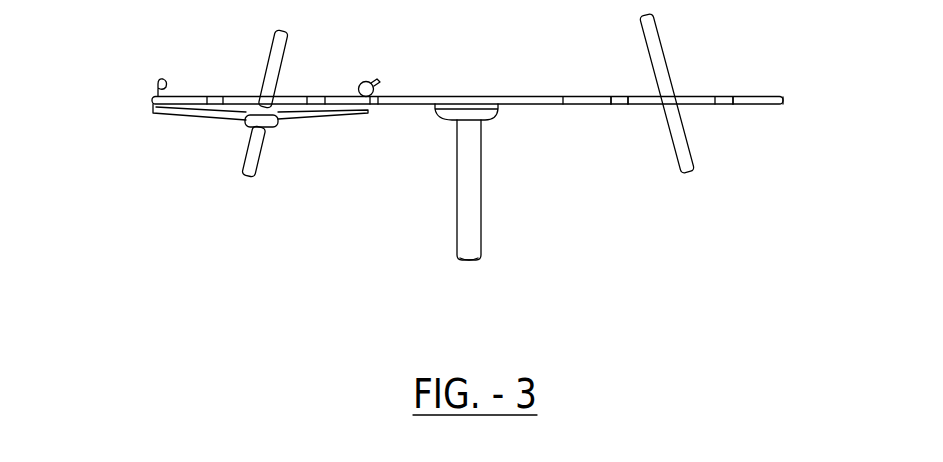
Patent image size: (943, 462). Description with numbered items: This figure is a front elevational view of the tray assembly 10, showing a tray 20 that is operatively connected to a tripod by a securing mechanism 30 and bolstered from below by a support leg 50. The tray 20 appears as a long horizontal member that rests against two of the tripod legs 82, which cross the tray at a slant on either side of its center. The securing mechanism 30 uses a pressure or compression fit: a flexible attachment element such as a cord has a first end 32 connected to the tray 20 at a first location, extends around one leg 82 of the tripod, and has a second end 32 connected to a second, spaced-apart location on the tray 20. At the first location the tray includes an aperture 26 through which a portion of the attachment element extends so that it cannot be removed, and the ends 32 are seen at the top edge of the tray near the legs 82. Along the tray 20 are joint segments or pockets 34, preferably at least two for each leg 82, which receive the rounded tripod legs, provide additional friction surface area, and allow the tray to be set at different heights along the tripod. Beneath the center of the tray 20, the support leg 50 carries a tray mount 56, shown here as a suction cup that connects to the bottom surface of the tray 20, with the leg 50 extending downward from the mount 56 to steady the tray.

The tray assembly 10 is at (157, 63).
The tray 20 is at (241, 94).
The aperture 26 is at (563, 95).
The securing mechanism 30 is at (217, 115).
The end of attachment element 32 is at (153, 90).
The joint segments or pockets 34 is at (728, 97).
The support leg 50 is at (455, 213).
The tray mount 56 is at (496, 121).
The legs 82 is at (286, 48).